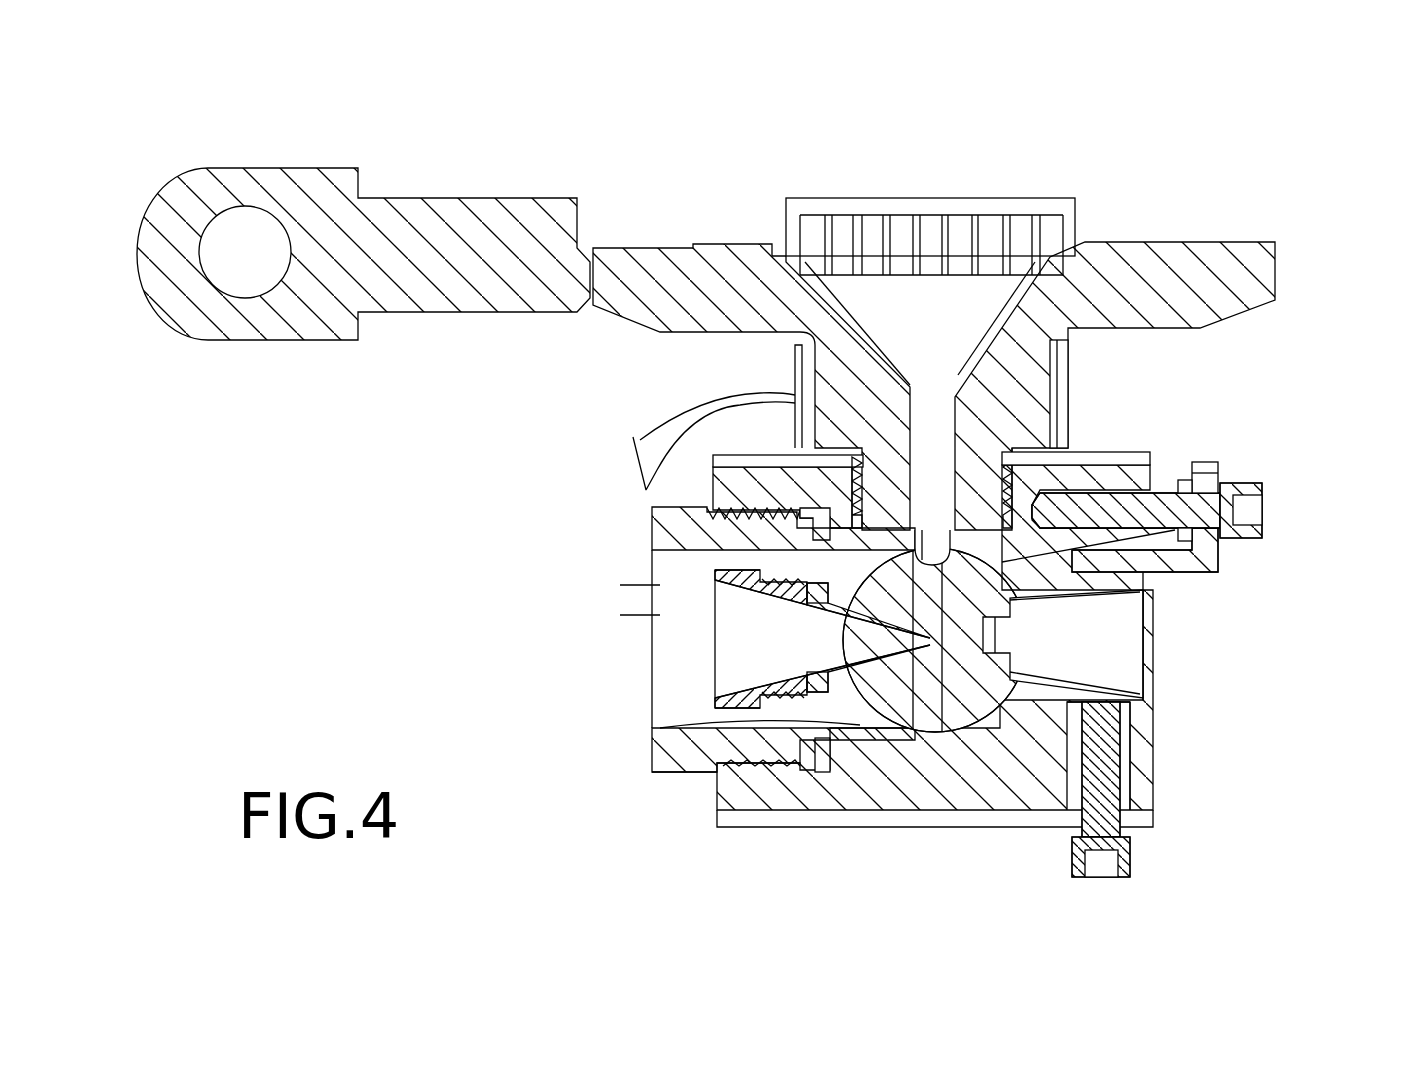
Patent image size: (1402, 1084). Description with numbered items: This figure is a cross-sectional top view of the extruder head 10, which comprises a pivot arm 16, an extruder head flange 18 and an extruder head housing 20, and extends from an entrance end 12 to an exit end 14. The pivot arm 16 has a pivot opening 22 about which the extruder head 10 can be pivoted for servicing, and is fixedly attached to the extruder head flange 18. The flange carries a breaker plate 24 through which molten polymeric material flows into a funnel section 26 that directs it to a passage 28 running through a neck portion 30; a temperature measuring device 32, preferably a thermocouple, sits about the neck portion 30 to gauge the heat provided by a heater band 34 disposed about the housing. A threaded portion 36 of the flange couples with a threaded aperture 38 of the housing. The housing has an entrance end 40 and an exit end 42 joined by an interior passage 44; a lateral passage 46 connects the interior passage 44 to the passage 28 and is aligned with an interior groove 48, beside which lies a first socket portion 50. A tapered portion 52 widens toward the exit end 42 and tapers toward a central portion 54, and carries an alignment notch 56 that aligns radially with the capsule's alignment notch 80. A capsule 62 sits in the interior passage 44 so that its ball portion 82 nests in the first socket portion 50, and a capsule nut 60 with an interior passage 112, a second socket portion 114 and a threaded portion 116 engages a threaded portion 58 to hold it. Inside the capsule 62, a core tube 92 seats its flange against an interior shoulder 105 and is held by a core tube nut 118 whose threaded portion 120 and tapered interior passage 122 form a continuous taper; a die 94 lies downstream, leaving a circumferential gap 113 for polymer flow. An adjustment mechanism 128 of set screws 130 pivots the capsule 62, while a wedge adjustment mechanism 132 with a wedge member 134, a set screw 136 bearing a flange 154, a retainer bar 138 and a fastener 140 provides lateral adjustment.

The extruder head 10 is at (1140, 108).
The entrance end 12 is at (572, 775).
The exit end 14 is at (1262, 740).
The pivot arm 16 is at (312, 352).
The extruder head flange 18 is at (1158, 244).
The extruder head housing 20 is at (694, 865).
The pivot opening 22 is at (250, 207).
The breaker plate 24 is at (946, 178).
The funnel section 26 is at (960, 365).
The passage 28 is at (945, 445).
The neck portion 30 is at (822, 382).
The temperature measuring device 32 is at (1092, 400).
The heater band 34 is at (770, 830).
The threaded portion 36 is at (866, 500).
The threaded aperture 38 is at (1005, 505).
The entrance end 40 is at (605, 690).
The exit end 42 is at (1262, 637).
The interior passage 44 is at (660, 590).
The passage 46 is at (940, 525).
The interior groove 48 is at (938, 548).
The first socket portion 50 is at (1010, 670).
The tapered portion 52 is at (1135, 738).
The central portion 54 is at (920, 760).
The alignment notch 56 is at (1135, 708).
The threaded portion 58 is at (718, 510).
The capsule nut 60 is at (655, 775).
The capsule 62 is at (972, 748).
The alignment notch 80 is at (1145, 665).
The ball portion 82 is at (955, 718).
The core tube 92 is at (820, 665).
The die 94 is at (1005, 650).
The interior shoulder 105 is at (760, 726).
The interior passage 112 is at (662, 645).
The circumferential gap 113 is at (905, 740).
The second socket portion 114 is at (840, 600).
The threaded portion 116 is at (740, 795).
The core tube nut 118 is at (718, 702).
The threaded portion 120 is at (790, 695).
The interior passage 122 is at (720, 595).
The adjustment mechanism 128 is at (1246, 914).
The set screws 130 is at (1132, 866).
The wedge adjustment mechanism 132 is at (1311, 463).
The wedge member 134 is at (1182, 572).
The set screw 136 is at (1240, 535).
The retainer bar 138 is at (1215, 490).
The fastener 140 is at (1200, 462).
The flange 154 is at (1148, 452).